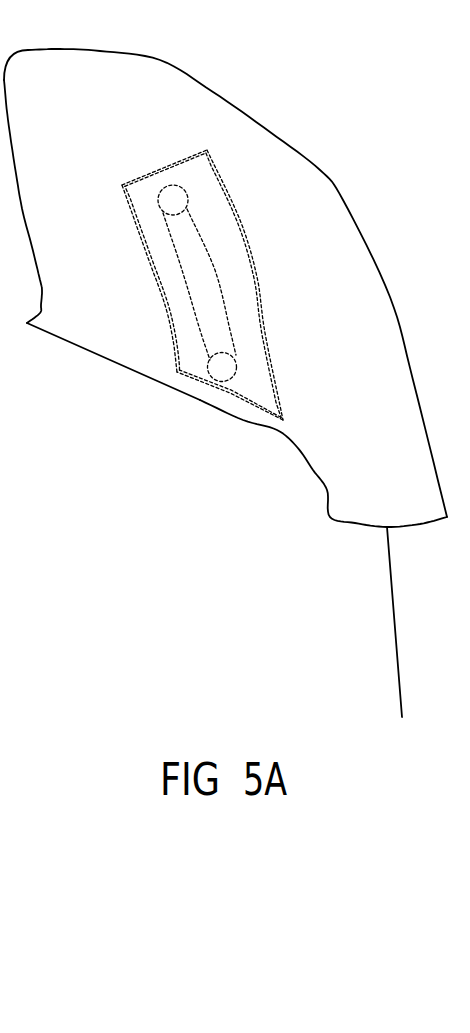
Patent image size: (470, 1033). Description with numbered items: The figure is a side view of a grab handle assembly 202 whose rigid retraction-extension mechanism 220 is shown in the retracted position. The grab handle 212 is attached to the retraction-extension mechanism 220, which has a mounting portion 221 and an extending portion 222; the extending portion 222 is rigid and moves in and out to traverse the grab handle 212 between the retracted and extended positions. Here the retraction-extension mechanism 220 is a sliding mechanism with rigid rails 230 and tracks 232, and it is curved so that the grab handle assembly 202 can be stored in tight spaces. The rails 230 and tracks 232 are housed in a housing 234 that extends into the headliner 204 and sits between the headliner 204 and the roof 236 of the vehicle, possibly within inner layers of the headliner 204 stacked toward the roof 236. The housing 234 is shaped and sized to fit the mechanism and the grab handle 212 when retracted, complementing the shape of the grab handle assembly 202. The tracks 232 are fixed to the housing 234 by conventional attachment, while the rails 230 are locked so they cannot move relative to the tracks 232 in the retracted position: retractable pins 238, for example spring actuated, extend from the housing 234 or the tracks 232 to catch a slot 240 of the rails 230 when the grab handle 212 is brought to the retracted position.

The grab handle assembly 202 is at (225, 370).
The headliner 204 is at (380, 433).
The grab handle 212 is at (245, 422).
The retraction-extension mechanism 220 is at (198, 263).
The mounting portion 221 is at (162, 168).
The extending portion 222 is at (257, 277).
The rails 230 is at (157, 270).
The tracks 232 is at (137, 225).
The housing 234 is at (267, 333).
The roof 236 is at (233, 92).
The retractable pins 238 is at (187, 195).
The slot 240 is at (202, 323).